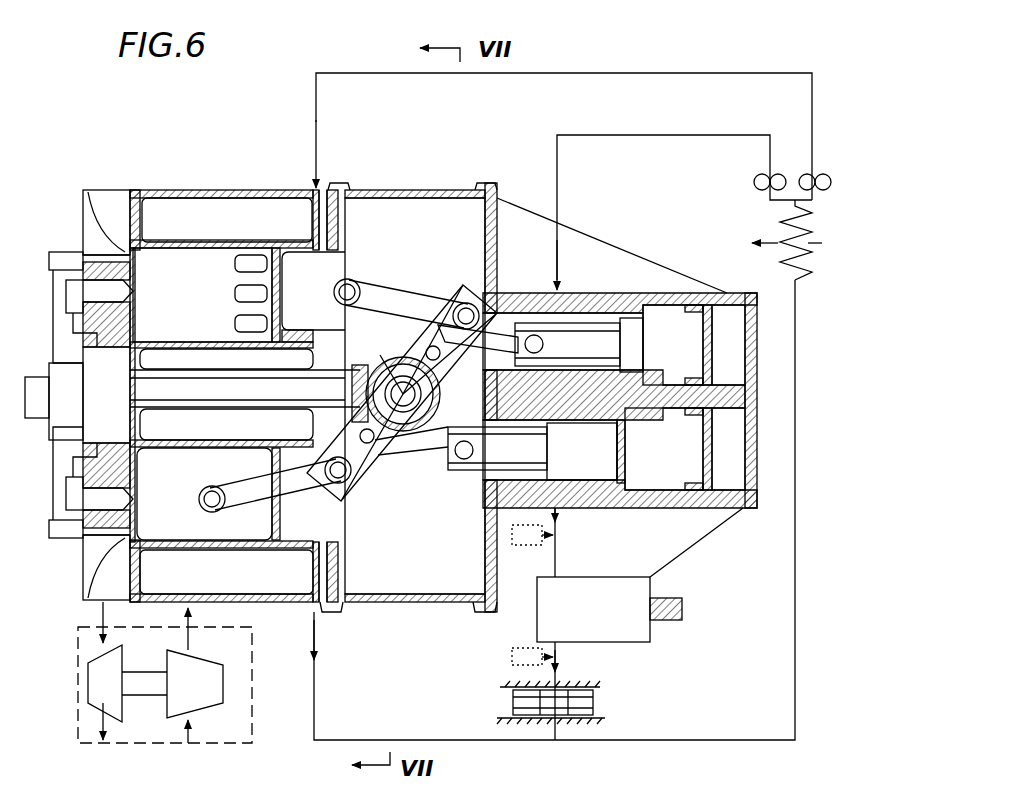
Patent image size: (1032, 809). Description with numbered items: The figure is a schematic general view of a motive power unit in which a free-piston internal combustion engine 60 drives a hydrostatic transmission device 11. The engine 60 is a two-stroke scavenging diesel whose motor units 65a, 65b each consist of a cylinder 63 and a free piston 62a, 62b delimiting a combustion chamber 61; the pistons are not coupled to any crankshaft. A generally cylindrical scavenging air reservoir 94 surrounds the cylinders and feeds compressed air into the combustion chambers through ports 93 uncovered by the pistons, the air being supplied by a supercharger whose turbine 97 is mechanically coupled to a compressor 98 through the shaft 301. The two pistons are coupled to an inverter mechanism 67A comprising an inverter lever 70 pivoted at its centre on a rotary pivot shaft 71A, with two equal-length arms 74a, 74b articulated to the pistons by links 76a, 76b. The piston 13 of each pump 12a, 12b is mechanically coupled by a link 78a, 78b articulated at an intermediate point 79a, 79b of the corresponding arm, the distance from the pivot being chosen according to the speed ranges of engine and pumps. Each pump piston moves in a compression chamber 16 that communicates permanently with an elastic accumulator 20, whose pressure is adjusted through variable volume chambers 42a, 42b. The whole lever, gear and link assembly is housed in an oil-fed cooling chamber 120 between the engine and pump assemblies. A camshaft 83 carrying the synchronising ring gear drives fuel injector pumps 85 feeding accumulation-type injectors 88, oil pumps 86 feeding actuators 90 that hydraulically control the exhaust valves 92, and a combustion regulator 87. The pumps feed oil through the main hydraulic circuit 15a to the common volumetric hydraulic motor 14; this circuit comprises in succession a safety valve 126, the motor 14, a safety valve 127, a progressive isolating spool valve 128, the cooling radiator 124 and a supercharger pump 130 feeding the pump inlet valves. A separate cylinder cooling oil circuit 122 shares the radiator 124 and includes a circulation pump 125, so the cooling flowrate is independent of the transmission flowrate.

The hydrostatic transmission device 11 is at (616, 281).
The pump 12a is at (644, 302).
The pump 12b is at (609, 499).
The piston 13 is at (572, 322).
The volumetric hydraulic motor 14 is at (605, 620).
The hydraulic circuit 15a is at (649, 133).
The compression chamber 16 is at (696, 304).
The elastic accumulator 20 is at (733, 326).
The variable volume chamber 42a is at (738, 359).
The variable volume chamber 42b is at (733, 444).
The internal combustion engine 60 is at (218, 188).
The combustion chamber 61 is at (196, 301).
The free piston 62a is at (312, 258).
The free piston 62b is at (163, 452).
The cylinder 63 is at (158, 195).
The motor unit 65a is at (220, 255).
The motor unit 65b is at (285, 550).
The inverter mechanism 67A is at (378, 460).
The inverter lever 70 is at (428, 370).
The rotary pivot shaft 71A is at (436, 400).
The arm 74a is at (443, 333).
The arm 74b is at (340, 486).
The link 76a is at (358, 303).
The link 76b is at (289, 488).
The link 78a is at (487, 333).
The link 78b is at (418, 456).
The intermediate articulation point 79a is at (400, 331).
The intermediate articulation point 79b is at (340, 437).
The camshaft 83 is at (181, 398).
The fuel injector pump 85 is at (117, 404).
The oil pump 86 is at (73, 404).
The combustion regulator 87 is at (52, 372).
The injector 88 is at (72, 300).
The actuator 90 is at (62, 251).
The exhaust valve 92 is at (82, 236).
The port 93 is at (232, 325).
The scavenging air reservoir 94 is at (214, 434).
The turbine 97 is at (95, 675).
The compressor 98 is at (215, 678).
The cooling chamber 120 is at (446, 194).
The oil circuit 122 is at (606, 75).
The cooling radiator 124 is at (783, 226).
The circulation pump 125 is at (800, 174).
The safety valve 126 is at (512, 540).
The safety valve 127 is at (512, 652).
The isolating spool valve 128 is at (595, 707).
The supercharger pump 130 is at (760, 176).
The shaft 301 is at (143, 697).